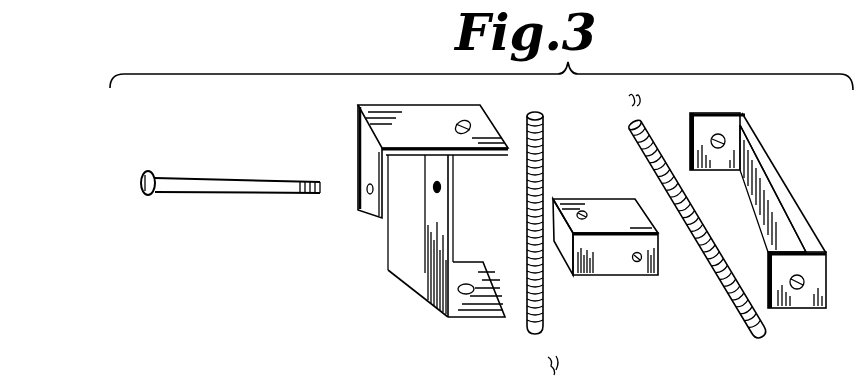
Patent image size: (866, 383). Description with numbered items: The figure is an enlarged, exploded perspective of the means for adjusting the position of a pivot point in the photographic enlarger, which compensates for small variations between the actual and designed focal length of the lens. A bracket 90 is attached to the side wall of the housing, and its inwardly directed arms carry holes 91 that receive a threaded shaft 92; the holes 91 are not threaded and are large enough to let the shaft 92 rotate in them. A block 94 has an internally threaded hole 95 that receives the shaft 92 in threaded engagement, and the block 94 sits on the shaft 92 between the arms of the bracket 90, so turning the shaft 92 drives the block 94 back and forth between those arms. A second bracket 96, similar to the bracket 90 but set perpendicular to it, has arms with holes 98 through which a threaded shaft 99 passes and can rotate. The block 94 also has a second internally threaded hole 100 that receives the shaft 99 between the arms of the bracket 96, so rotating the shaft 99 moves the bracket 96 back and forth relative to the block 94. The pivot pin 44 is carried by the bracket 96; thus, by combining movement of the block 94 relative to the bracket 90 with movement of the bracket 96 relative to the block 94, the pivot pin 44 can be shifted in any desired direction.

The pivot pin 44 is at (264, 178).
The bracket 90 is at (790, 198).
The holes 91 is at (714, 150).
The threaded shaft 92 is at (697, 229).
The block 94 is at (612, 277).
The internally threaded hole 95 is at (632, 258).
The bracket 96 is at (426, 228).
The holes 98 is at (470, 281).
The threaded shaft 99 is at (544, 184).
The internally threaded hole 100 is at (589, 216).